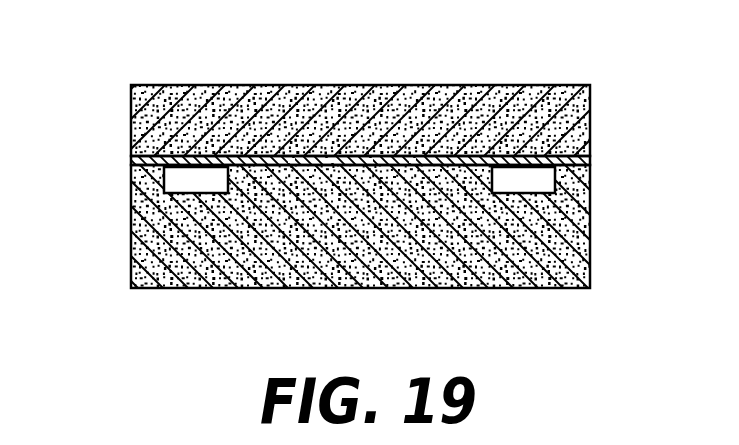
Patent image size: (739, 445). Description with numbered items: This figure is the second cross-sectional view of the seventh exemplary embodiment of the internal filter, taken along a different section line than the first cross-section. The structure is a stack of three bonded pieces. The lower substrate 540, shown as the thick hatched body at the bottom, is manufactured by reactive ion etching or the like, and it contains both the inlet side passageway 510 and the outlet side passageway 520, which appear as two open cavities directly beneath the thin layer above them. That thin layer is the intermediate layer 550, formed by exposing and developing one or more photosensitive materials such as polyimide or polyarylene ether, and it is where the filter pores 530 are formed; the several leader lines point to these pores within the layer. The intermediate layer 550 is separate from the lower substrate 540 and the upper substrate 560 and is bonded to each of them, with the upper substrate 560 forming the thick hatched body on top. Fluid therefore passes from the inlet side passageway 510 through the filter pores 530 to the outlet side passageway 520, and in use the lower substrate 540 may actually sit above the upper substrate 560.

The inlet side passageway 510 is at (194, 188).
The outlet side passageway 520 is at (523, 188).
The filter pores 530 is at (413, 162).
The lower substrate 540 is at (130, 243).
The intermediate layer 550 is at (130, 162).
The upper substrate 560 is at (130, 113).